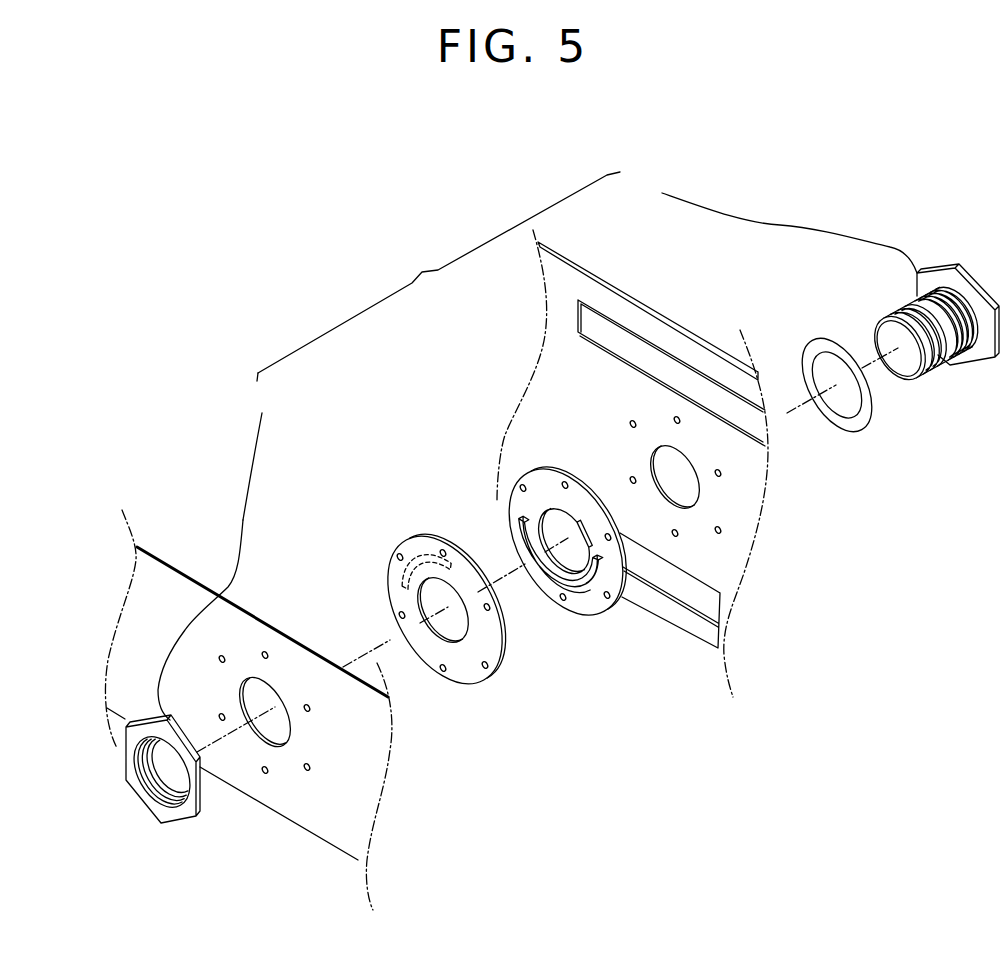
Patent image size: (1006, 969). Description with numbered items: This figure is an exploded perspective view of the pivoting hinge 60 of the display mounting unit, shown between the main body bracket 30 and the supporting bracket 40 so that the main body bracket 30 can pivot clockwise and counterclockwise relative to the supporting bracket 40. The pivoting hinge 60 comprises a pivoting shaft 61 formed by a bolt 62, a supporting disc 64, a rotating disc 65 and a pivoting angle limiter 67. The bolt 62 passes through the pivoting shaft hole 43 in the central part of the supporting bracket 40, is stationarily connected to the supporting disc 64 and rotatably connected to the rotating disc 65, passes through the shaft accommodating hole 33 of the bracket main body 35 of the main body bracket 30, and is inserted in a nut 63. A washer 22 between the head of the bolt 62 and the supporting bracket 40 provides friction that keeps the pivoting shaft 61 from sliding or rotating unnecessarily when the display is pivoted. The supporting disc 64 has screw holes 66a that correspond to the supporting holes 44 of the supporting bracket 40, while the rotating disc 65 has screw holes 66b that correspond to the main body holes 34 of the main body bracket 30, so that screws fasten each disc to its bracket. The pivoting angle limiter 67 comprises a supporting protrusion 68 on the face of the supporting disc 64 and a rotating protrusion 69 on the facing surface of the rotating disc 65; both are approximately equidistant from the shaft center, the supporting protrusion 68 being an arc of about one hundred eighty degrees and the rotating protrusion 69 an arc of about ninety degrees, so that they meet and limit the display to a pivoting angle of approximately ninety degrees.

The pivoting hinge 60 is at (912, 168).
The pivoting shaft 61 is at (389, 446).
The bolt 62 is at (773, 223).
The nut 63 is at (258, 446).
The washer 22 is at (813, 348).
The supporting bracket 40 is at (705, 645).
The pivoting shaft hole 43 is at (697, 470).
The supporting holes 44 is at (718, 473).
The supporting disc 64 is at (547, 483).
The rotating disc 65 is at (393, 570).
The screw holes 66a is at (563, 598).
The screw holes 66b is at (442, 668).
The pivoting angle limiter 67 is at (465, 396).
The supporting protrusion 68 is at (513, 530).
The rotating protrusion 69 is at (438, 545).
The main body bracket 30 is at (320, 835).
The shaft accommodating hole 33 is at (273, 693).
The main body holes 34 is at (307, 708).
The bracket main body 35 is at (282, 800).